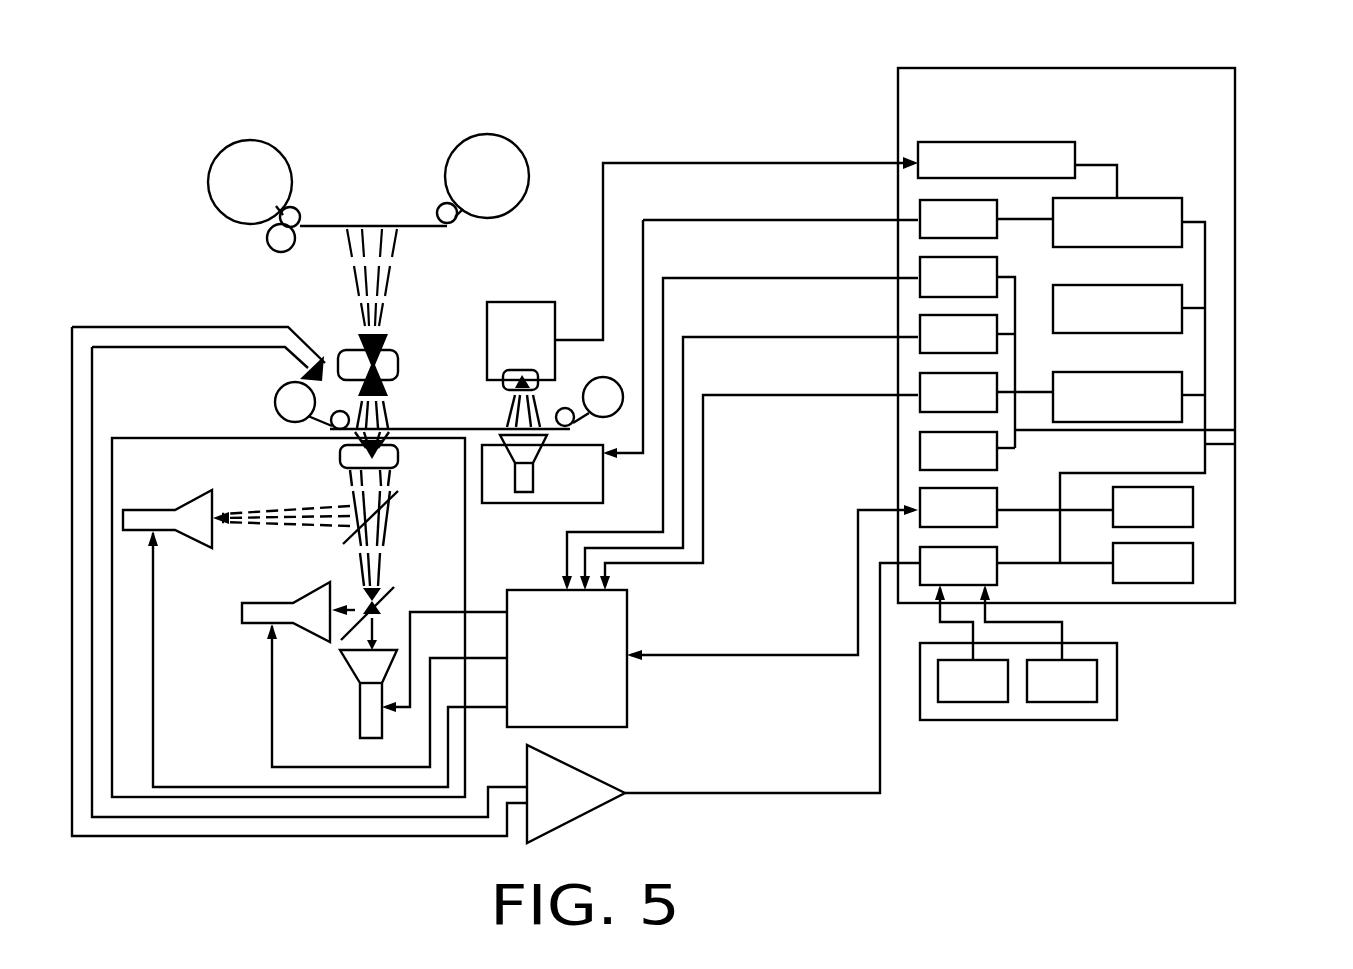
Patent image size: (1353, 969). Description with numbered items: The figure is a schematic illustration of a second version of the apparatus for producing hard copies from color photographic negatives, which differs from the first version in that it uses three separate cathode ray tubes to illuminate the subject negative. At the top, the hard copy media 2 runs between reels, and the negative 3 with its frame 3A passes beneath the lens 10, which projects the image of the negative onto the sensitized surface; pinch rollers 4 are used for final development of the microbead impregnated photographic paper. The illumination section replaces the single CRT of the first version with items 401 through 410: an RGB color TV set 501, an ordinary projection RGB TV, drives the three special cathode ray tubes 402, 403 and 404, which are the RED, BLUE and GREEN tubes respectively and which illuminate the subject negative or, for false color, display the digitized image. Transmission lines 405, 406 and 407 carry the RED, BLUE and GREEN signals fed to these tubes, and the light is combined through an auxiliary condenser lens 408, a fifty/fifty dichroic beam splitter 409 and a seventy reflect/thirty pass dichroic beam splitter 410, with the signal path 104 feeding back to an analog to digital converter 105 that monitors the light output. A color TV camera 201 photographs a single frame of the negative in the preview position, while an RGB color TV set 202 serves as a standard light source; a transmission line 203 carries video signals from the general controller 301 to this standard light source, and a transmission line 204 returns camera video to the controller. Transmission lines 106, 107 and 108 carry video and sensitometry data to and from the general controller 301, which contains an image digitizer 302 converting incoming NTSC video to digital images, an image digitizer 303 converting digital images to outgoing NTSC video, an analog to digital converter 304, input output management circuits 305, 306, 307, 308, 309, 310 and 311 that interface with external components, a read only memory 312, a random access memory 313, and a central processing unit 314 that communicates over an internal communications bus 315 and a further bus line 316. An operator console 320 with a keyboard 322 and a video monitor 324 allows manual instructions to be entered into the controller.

The hard copy media 2 is at (390, 226).
The negative 3 is at (446, 428).
The film frame 3A is at (388, 427).
The pinch rollers 4 is at (270, 249).
The lens 10 is at (356, 352).
The photometry signal path 104 is at (139, 326).
The analog to digital converter 105 is at (629, 797).
The transmission line 106 is at (675, 658).
The transmission line 107 is at (599, 570).
The transmission line 108 is at (883, 713).
The color TV camera 201 is at (516, 303).
The RGB color TV set 202 is at (497, 504).
The transmission line 203 is at (618, 458).
The transmission line 204 is at (603, 251).
The general controller 301 is at (1235, 256).
The image digitizer 302 is at (1182, 205).
The image digitizer 303 is at (1182, 382).
The analog to digital converter 304 is at (1075, 150).
The input output management circuit 305 is at (918, 210).
The input output management circuit 306 is at (918, 268).
The input output management circuit 307 is at (918, 323).
The input output management circuit 308 is at (918, 381).
The input output management circuit 309 is at (918, 441).
The input output management circuit 310 is at (918, 496).
The input output management circuit 311 is at (918, 556).
The read only memory 312 is at (1193, 497).
The random access memory 313 is at (1193, 552).
The central processing unit 314 is at (1182, 297).
The internal communications bus 315 is at (1235, 444).
The bus line 316 is at (1235, 430).
The operator console 320 is at (1118, 672).
The keyboard 322 is at (1002, 702).
The video monitor 324 is at (1082, 702).
The illumination unit item 401 is at (172, 439).
The cathode ray tube 402 is at (187, 499).
The cathode ray tube 403 is at (307, 603).
The cathode ray tube 404 is at (361, 727).
The transmission line 405 is at (270, 660).
The transmission line 406 is at (156, 670).
The transmission line 407 is at (448, 611).
The auxiliary condenser lens 408 is at (340, 463).
The dichroic beam splitter 409 is at (356, 523).
The dichroic beam splitter 410 is at (391, 587).
The RGB color TV set 501 is at (629, 712).